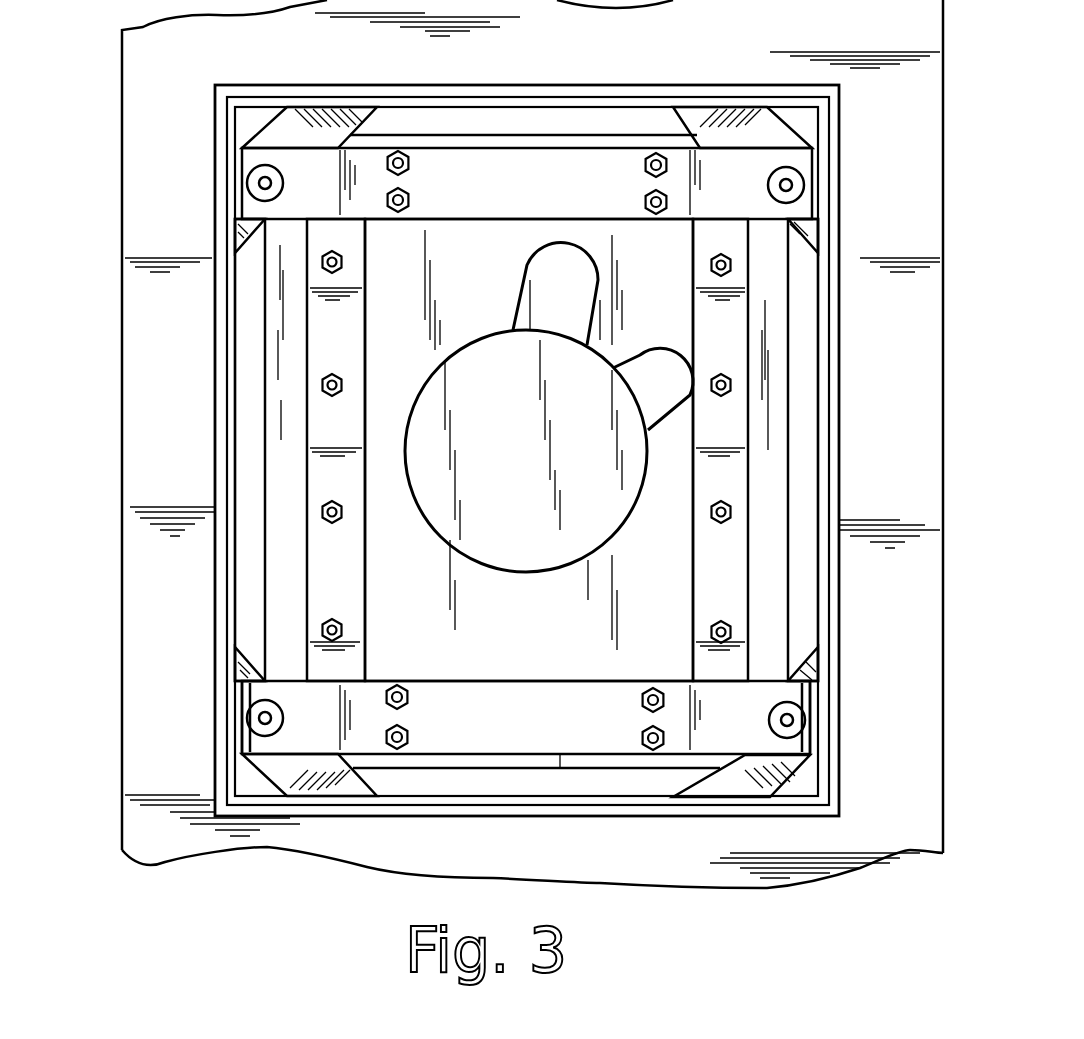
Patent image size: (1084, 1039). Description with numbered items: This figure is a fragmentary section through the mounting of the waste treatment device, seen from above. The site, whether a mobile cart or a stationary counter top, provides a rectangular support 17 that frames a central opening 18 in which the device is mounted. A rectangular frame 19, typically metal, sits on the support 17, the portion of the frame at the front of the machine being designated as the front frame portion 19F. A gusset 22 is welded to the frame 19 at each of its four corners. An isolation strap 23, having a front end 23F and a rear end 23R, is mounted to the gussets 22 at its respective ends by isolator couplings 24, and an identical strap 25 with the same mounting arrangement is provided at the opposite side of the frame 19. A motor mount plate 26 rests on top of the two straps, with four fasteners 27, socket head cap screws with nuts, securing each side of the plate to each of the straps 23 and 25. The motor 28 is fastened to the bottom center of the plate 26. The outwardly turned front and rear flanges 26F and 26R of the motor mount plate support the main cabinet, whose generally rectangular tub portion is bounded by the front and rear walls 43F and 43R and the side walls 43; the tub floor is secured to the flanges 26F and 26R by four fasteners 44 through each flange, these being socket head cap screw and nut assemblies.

The support 17 is at (130, 556).
The central opening 18 is at (627, 92).
The rectangular frame 19 is at (233, 393).
The front portion of frame 19F is at (828, 395).
The gusset 22 is at (332, 120).
The isolation strap 23 is at (547, 741).
The rear end of isolation strap 23R is at (242, 718).
The front end of isolation strap 23F is at (812, 728).
The isolator coupling 24 is at (284, 184).
The strap 25 is at (490, 162).
The motor mount plate 26 is at (503, 636).
The rear flange of motor mount plate 26R is at (379, 585).
The front flange of motor mount plate 26F is at (693, 566).
The fastener 27 is at (412, 195).
The motor 28 is at (512, 509).
The side wall of tub 43 is at (553, 133).
The rear wall of tub 43R is at (265, 328).
The front wall of tub 43F is at (790, 356).
The fastener 44 is at (345, 262).